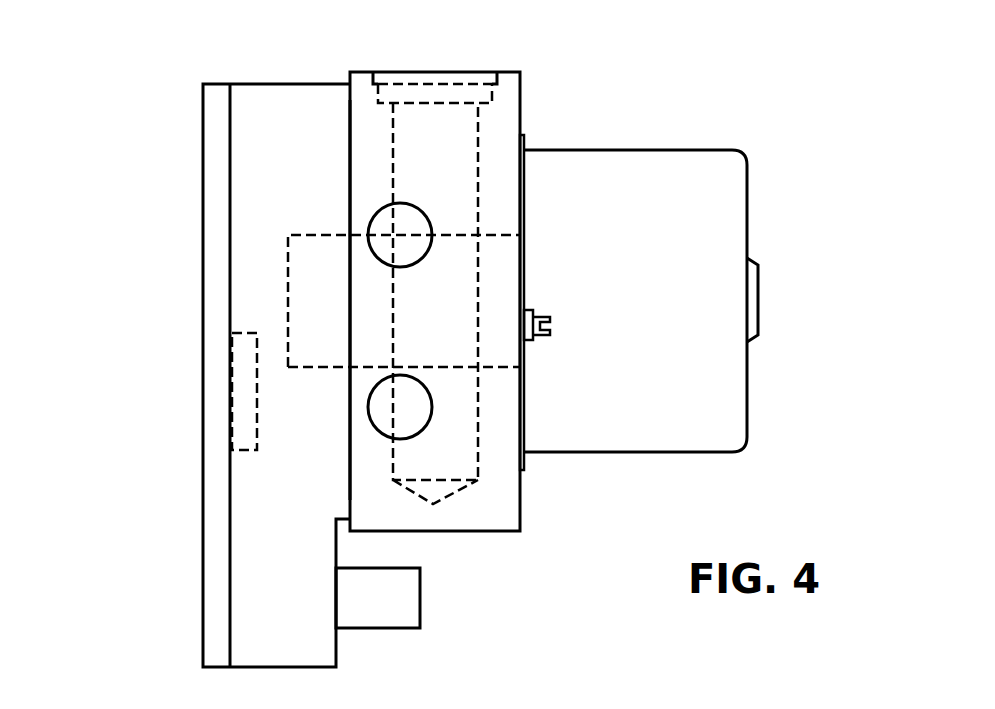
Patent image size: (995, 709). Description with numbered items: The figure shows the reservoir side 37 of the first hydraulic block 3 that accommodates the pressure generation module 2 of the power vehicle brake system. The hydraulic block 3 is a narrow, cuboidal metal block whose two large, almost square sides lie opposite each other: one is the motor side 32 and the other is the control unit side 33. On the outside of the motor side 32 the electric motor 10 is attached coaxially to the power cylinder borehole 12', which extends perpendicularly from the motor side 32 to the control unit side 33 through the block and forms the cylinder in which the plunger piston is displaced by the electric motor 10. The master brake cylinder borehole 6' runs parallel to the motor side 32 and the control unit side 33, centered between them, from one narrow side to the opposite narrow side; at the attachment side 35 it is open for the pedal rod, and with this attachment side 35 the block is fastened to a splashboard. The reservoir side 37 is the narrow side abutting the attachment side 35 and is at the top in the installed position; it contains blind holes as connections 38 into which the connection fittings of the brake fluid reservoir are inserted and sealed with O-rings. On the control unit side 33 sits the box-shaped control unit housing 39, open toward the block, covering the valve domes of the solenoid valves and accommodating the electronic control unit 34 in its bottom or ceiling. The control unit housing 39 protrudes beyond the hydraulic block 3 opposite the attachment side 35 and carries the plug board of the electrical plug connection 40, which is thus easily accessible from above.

The pressure generation module 2 is at (147, 78).
The hydraulic block 3 is at (432, 513).
The master brake cylinder borehole 6' is at (346, 93).
The electric motor 10 is at (708, 170).
The power cylinder borehole 12' is at (561, 407).
The motor side 32 is at (522, 210).
The control unit side 33 is at (350, 452).
The electronic control unit 34 is at (240, 387).
The attachment side 35 is at (457, 58).
The reservoir side 37 is at (421, 338).
The connections 38 is at (408, 220).
The control unit housing 39 is at (240, 225).
The electrical plug connection 40 is at (403, 613).